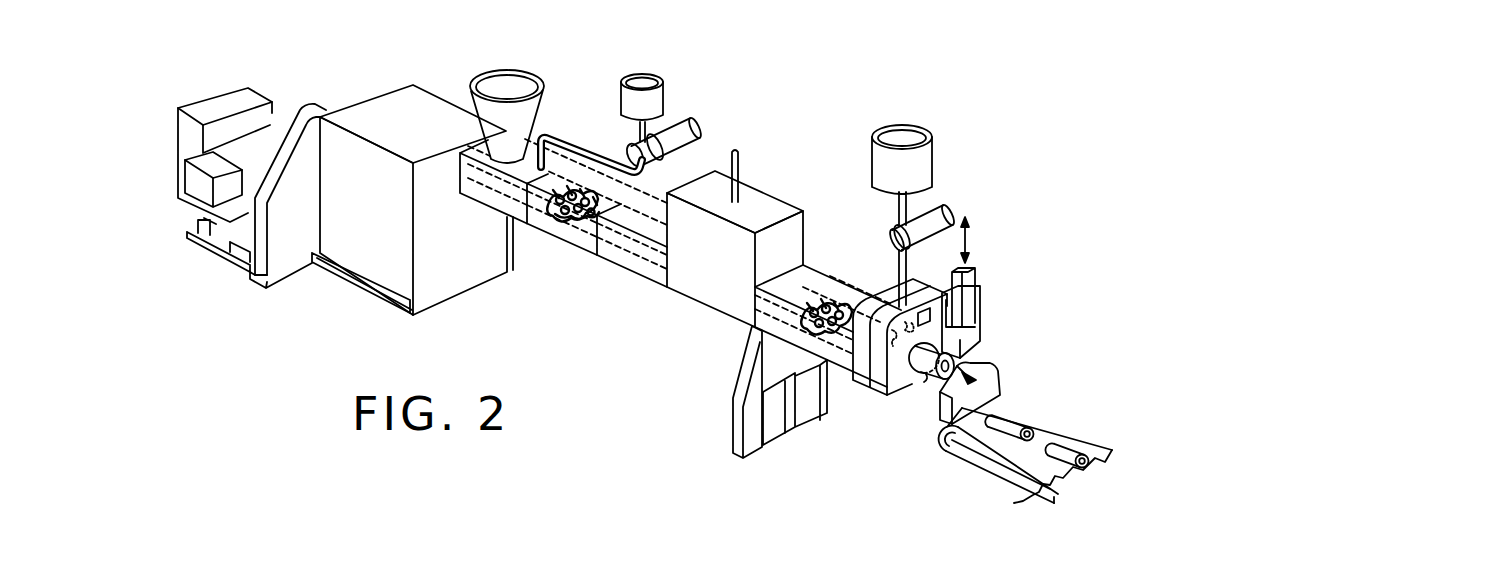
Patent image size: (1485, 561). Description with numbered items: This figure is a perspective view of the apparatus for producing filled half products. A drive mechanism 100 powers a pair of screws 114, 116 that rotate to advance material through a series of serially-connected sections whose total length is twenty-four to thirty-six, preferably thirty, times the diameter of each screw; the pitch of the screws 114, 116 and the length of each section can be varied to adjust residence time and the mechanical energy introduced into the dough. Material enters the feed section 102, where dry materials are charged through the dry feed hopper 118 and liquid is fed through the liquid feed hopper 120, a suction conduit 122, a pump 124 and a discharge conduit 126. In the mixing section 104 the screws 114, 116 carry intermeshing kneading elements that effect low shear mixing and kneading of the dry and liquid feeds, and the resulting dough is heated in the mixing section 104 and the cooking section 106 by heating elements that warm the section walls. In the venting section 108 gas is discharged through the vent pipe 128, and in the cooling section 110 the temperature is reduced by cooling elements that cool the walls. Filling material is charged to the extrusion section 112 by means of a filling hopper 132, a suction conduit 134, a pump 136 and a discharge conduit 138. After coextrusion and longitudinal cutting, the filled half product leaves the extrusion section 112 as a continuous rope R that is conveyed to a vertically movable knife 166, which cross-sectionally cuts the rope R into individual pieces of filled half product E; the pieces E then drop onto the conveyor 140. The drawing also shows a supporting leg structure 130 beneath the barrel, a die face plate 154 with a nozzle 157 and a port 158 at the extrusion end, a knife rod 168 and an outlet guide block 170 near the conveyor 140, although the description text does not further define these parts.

The drive mechanism 100 is at (337, 90).
The feed section 102 is at (493, 197).
The mixing section 104 is at (580, 240).
The cooking section 106 is at (638, 262).
The venting section 108 is at (695, 287).
The cooling section 110 is at (810, 279).
The extrusion section 112 is at (857, 367).
The screw 114 is at (567, 220).
The screw 116 is at (573, 217).
The dry feed hopper 118 is at (510, 64).
The liquid feed hopper 120 is at (657, 68).
The suction conduit 122 is at (667, 120).
The pump 124 is at (700, 128).
The discharge conduit 126 is at (553, 136).
The vent pipe 128 is at (740, 171).
The support legs 130 is at (740, 438).
The filling hopper 132 is at (933, 160).
The suction conduit 134 is at (912, 200).
The pump 136 is at (953, 209).
The discharge conduit 138 is at (810, 277).
The conveyor 140 is at (1057, 432).
The die face plate 154 is at (880, 393).
The die nozzle 157 is at (903, 377).
The injection port 158 is at (925, 320).
The vertically movable knife 166 is at (967, 330).
The cutter blade rod 168 is at (972, 287).
The outlet guide block 170 is at (997, 377).
The continuous rope R is at (923, 373).
The filled half product pieces E is at (1085, 457).